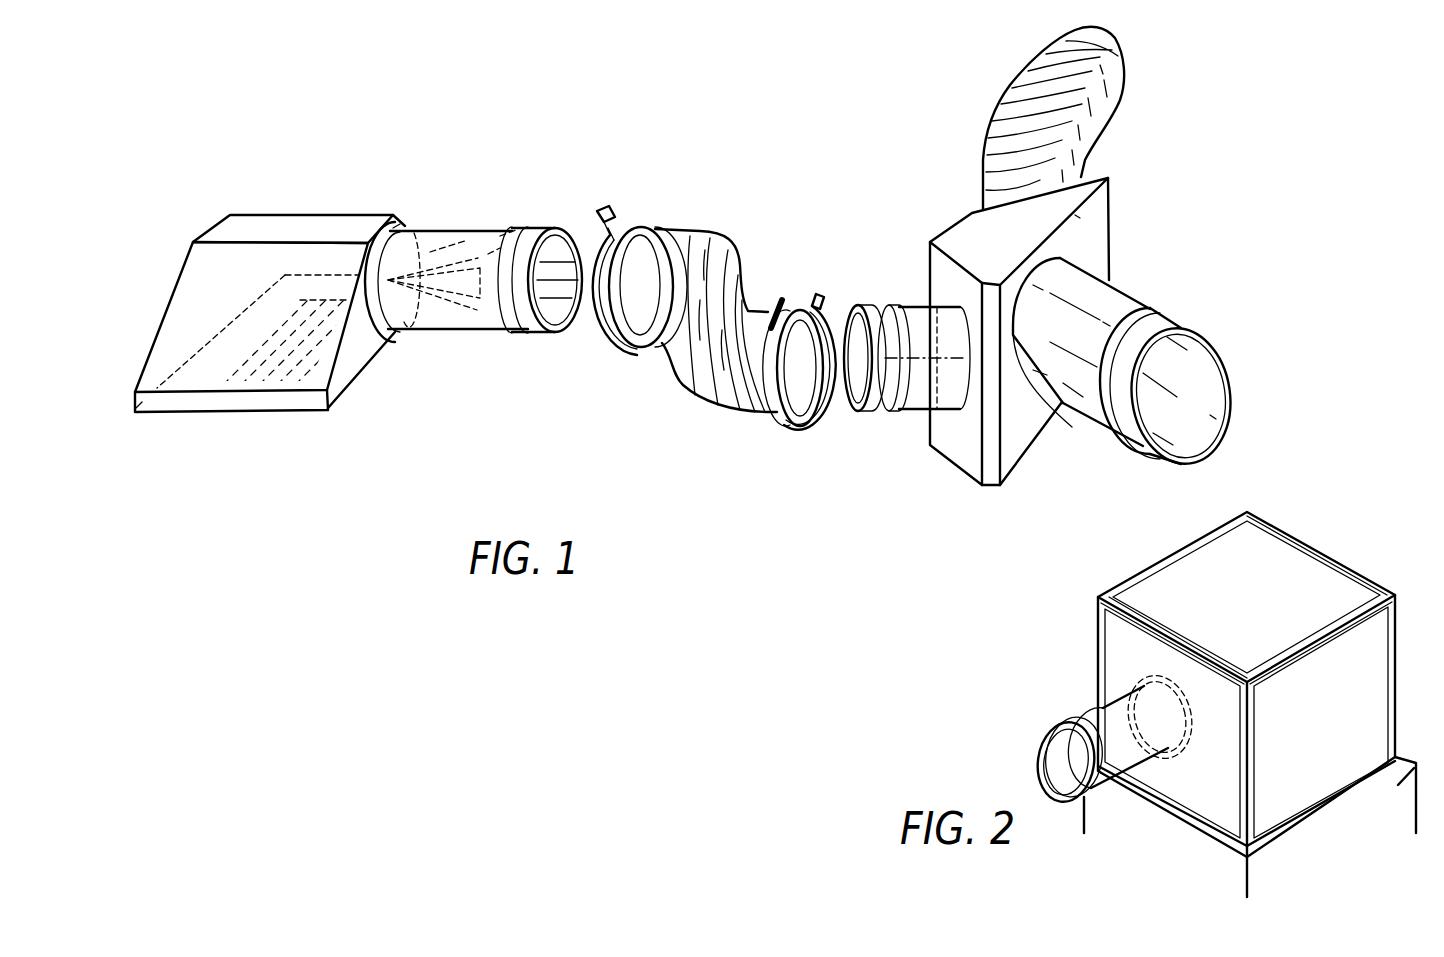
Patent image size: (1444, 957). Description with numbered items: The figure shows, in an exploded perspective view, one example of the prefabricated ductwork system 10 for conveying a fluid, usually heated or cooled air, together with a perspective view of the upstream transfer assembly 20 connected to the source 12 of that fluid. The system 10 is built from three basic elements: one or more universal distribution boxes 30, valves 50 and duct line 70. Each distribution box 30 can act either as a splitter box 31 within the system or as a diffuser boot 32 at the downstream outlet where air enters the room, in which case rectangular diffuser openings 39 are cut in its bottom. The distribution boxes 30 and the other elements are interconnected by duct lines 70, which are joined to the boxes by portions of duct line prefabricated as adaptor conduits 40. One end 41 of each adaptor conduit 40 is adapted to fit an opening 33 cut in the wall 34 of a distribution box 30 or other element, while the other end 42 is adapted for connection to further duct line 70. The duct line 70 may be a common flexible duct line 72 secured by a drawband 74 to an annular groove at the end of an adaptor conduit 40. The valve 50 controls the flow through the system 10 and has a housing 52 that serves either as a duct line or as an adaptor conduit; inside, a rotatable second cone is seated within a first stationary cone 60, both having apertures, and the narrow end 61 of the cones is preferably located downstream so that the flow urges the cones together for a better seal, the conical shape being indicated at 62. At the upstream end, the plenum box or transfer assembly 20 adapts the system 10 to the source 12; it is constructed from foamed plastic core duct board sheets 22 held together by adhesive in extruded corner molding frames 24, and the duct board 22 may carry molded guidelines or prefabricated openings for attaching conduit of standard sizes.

In FIG. 1, the ductwork system 10 is at (651, 133).
In FIG. 2, the source 12 is at (1410, 767).
In FIG. 2, the transfer assembly 20 is at (1282, 550).
In FIG. 2, the duct board sheets 22 is at (1318, 563).
In FIG. 2, the corner molding frames 24 is at (1130, 581).
In FIG. 1, the distribution box 30 is at (283, 221).
In FIG. 1, the splitter box 31 is at (1097, 227).
In FIG. 1, the diffuser boot 32 is at (332, 222).
In FIG. 1, the opening 33 is at (400, 228).
In FIG. 1, the wall 34 is at (349, 368).
In FIG. 1, the diffuser openings 39 is at (297, 380).
In FIG. 1, the adaptor conduits 40 is at (412, 310).
In FIG. 2, the adaptor conduits 40 is at (1102, 710).
In FIG. 1, the one end 41 is at (382, 338).
In FIG. 1, the other end 42 is at (527, 333).
In FIG. 1, the valve 50 is at (473, 253).
In FIG. 1, the housing 52 is at (442, 241).
In FIG. 1, the first stationary cone 60 is at (488, 257).
In FIG. 1, the narrow end 61 is at (394, 277).
In FIG. 1, the cone 62 is at (459, 300).
In FIG. 1, the duct line 70 is at (718, 246).
In FIG. 2, the duct line 70 is at (1127, 776).
In FIG. 1, the flexible duct line 72 is at (700, 380).
In FIG. 1, the drawband 74 is at (778, 416).